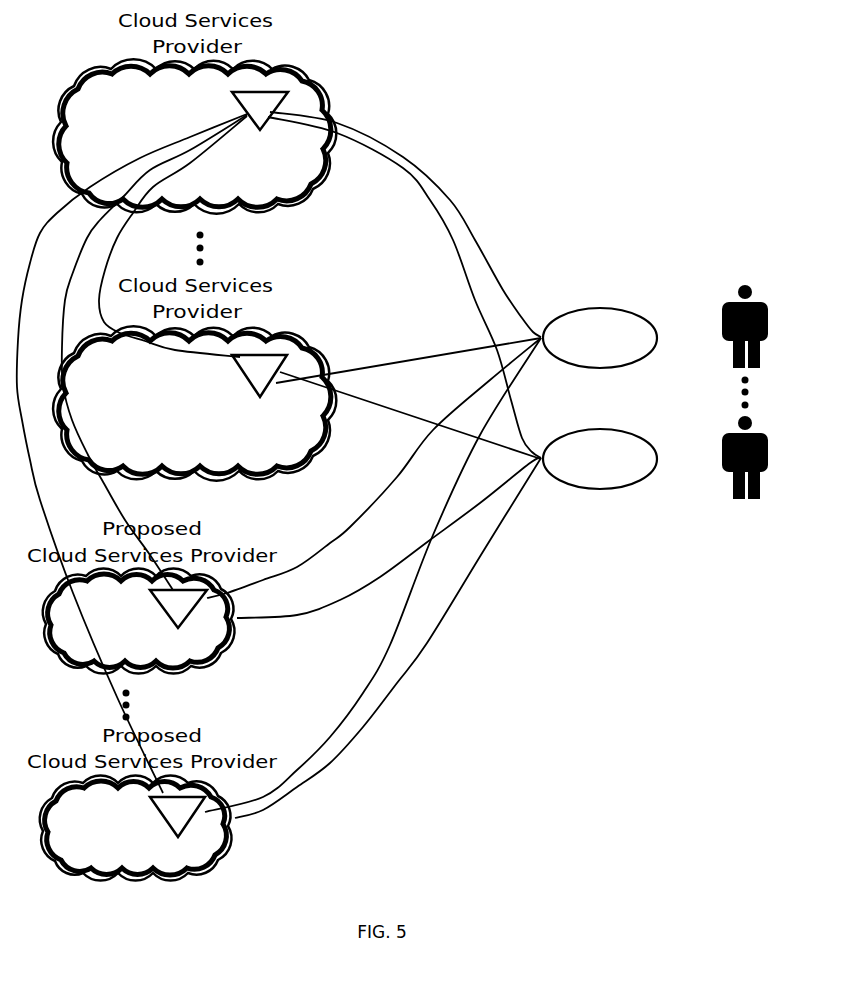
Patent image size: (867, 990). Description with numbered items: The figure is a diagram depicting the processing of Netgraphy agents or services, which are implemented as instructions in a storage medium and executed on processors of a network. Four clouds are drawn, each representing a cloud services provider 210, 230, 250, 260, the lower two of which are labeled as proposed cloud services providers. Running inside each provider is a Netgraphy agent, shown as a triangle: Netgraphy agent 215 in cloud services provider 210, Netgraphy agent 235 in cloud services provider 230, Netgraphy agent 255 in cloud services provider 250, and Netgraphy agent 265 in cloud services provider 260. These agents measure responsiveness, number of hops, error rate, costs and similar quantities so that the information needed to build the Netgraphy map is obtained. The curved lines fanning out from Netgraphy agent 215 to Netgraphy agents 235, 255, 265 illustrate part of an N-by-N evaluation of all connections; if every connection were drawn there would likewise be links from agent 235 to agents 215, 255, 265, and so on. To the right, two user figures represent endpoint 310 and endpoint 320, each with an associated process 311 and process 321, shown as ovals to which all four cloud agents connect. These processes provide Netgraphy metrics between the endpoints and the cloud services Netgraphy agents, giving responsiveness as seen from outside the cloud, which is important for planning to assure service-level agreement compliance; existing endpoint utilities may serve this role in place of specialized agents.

The cloud services provider 210 is at (194, 136).
The Netgraphy agent 215 is at (245, 110).
The cloud services provider 230 is at (194, 401).
The Netgraphy agent 235 is at (243, 385).
The cloud services provider 250 is at (167, 620).
The Netgraphy agent 255 is at (166, 612).
The cloud services provider 260 is at (165, 827).
The Netgraphy agent 265 is at (164, 815).
The endpoint 310 is at (761, 323).
The process 311 is at (600, 338).
The endpoint 320 is at (761, 453).
The process 321 is at (600, 459).